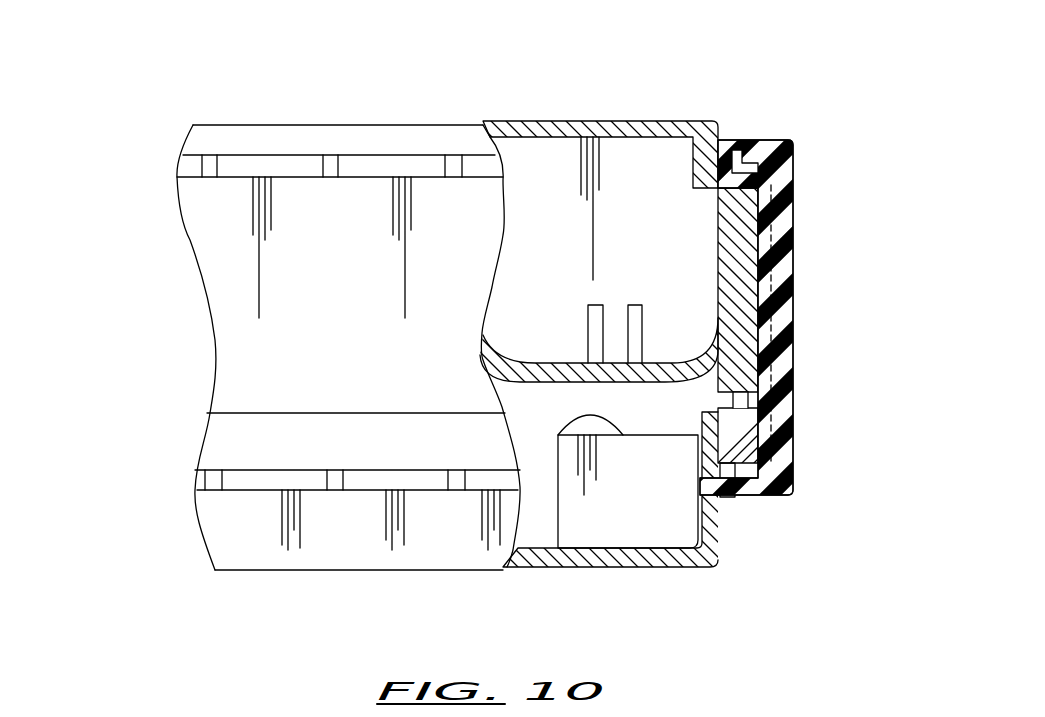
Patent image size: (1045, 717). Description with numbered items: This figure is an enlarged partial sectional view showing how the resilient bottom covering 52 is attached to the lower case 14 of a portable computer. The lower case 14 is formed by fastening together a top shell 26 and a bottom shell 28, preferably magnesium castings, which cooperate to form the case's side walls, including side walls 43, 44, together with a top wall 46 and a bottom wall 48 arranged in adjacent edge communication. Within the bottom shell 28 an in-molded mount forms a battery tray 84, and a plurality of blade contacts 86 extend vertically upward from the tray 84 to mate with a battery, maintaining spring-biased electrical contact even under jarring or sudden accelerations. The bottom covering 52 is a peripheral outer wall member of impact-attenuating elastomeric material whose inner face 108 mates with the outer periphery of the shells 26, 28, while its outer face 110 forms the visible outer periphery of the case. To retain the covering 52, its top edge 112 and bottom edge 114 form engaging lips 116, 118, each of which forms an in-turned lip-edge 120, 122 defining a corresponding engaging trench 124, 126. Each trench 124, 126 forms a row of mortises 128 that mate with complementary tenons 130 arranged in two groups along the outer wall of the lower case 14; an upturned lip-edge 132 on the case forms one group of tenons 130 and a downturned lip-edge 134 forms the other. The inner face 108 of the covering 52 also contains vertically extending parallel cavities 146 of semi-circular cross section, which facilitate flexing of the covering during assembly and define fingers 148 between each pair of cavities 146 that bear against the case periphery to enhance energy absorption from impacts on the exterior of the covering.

The lower case 14 is at (152, 218).
The top shell 26 is at (465, 122).
The bottom shell 28 is at (675, 566).
The side wall 43 is at (653, 345).
The side wall 44 is at (340, 347).
The top wall 46 is at (420, 85).
The bottom wall 48 is at (328, 588).
The bottom covering 52 is at (795, 300).
The battery tray 84 is at (518, 350).
The blade contacts 86 is at (633, 322).
The inner face 108 is at (793, 215).
The outer face 110 is at (795, 363).
The top edge 112 is at (727, 140).
The bottom edge 114 is at (783, 500).
The engaging lip 116 is at (712, 150).
The engaging lip 118 is at (705, 468).
The in-turned lip-edge 120 is at (705, 188).
The in-turned lip-edge 122 is at (795, 400).
The engaging trench 124 is at (735, 190).
The engaging trench 126 is at (792, 428).
The mortises 128 is at (766, 140).
The tenons 130 is at (397, 162).
The upturned lip-edge 132 is at (289, 146).
The downturned lip-edge 134 is at (265, 500).
The cavities 146 is at (792, 182).
The fingers 148 is at (792, 258).